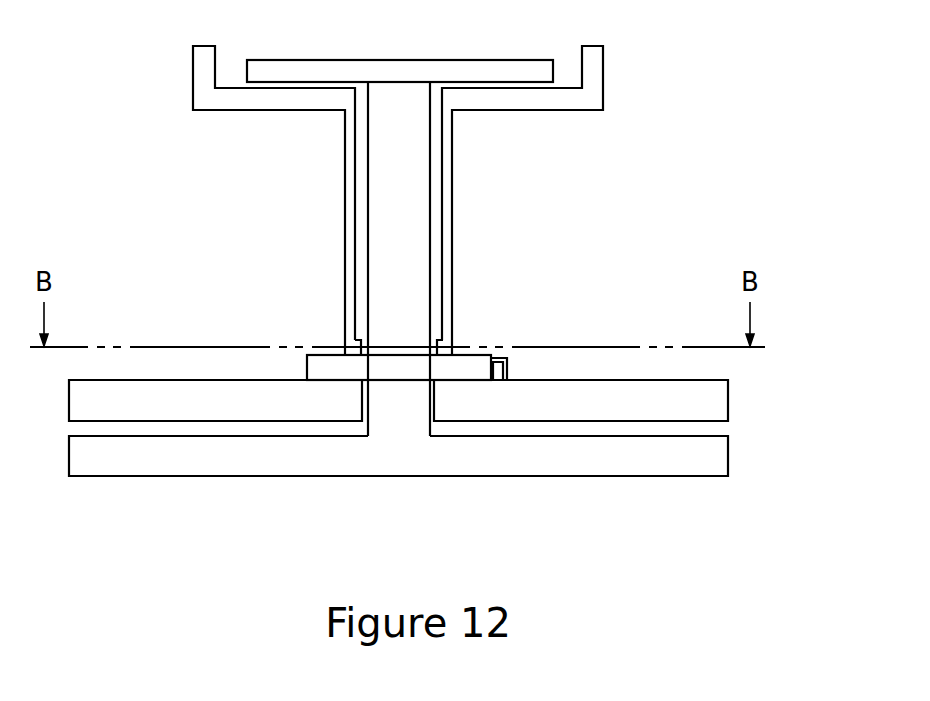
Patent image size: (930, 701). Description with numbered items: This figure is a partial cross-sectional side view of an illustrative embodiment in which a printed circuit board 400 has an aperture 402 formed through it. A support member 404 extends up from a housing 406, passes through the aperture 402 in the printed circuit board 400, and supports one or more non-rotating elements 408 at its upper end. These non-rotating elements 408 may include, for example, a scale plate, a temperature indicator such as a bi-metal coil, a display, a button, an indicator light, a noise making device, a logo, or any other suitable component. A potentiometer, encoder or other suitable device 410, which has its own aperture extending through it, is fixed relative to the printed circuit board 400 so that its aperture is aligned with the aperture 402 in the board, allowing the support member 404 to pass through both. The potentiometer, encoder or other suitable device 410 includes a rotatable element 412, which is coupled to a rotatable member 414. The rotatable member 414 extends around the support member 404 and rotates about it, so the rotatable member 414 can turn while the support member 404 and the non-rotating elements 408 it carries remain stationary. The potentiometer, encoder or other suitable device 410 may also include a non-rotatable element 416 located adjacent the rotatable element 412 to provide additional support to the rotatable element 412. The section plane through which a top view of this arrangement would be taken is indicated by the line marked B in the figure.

The printed circuit board 400 is at (725, 412).
The aperture 402 is at (431, 428).
The support member 404 is at (390, 201).
The housing 406 is at (714, 471).
The non-rotating elements 408 is at (415, 66).
The potentiometer, encoder or other suitable device 410 is at (312, 368).
The rotatable element 412 is at (346, 345).
The rotatable member 414 is at (197, 69).
The non-rotatable element 416 is at (441, 345).